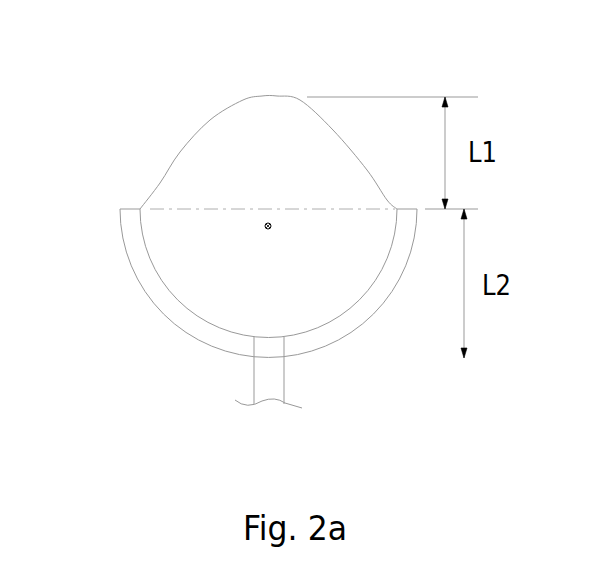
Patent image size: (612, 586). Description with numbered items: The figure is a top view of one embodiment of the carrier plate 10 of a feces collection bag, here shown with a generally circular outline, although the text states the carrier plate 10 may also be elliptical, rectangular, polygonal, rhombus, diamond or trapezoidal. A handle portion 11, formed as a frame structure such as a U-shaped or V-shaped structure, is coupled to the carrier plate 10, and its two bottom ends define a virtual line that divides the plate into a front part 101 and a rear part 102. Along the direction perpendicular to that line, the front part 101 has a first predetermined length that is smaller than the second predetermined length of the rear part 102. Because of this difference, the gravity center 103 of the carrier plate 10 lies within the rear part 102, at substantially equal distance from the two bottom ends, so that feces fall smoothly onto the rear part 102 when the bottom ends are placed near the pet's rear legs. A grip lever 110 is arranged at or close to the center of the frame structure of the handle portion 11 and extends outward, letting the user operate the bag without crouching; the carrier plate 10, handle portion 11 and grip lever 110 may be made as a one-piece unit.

The carrier plate 10 is at (288, 86).
The front part 101 is at (265, 165).
The rear part 102 is at (266, 265).
The gravity center 103 is at (266, 224).
The handle portion 11 is at (153, 285).
The grip lever 110 is at (254, 382).